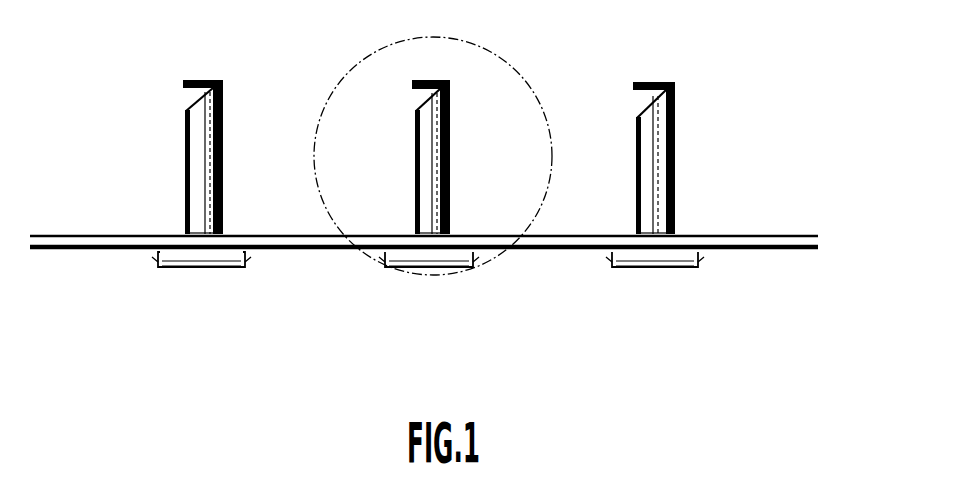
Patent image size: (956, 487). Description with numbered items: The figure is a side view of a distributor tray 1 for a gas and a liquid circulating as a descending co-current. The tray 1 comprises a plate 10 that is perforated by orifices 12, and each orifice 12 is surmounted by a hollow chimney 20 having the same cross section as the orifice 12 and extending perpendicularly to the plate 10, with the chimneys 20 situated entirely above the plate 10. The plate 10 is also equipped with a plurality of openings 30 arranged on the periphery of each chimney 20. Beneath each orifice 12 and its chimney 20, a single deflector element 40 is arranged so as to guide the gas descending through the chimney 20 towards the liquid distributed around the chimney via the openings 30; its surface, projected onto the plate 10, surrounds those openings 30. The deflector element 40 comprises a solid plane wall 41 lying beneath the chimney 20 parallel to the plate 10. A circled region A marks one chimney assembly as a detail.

The distributor tray 1 is at (142, 190).
The plate 10 is at (100, 244).
The orifice 12 is at (223, 233).
The chimney 20 is at (224, 136).
The opening 30 is at (158, 255).
The deflector element 40 is at (198, 272).
The solid plane wall 41 is at (212, 268).
The detail region A is at (529, 99).